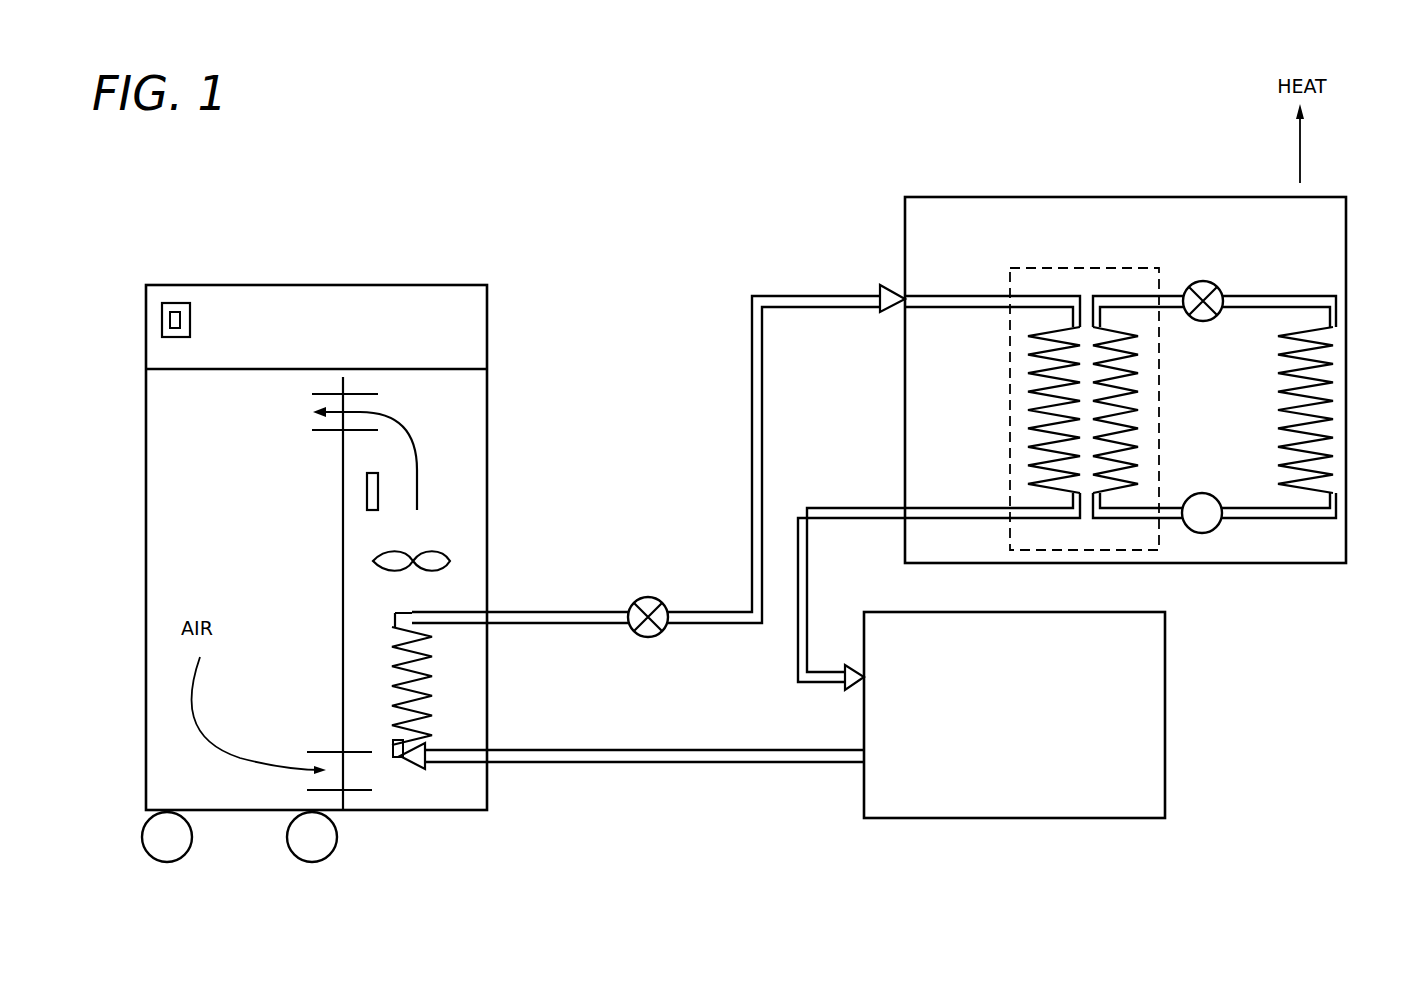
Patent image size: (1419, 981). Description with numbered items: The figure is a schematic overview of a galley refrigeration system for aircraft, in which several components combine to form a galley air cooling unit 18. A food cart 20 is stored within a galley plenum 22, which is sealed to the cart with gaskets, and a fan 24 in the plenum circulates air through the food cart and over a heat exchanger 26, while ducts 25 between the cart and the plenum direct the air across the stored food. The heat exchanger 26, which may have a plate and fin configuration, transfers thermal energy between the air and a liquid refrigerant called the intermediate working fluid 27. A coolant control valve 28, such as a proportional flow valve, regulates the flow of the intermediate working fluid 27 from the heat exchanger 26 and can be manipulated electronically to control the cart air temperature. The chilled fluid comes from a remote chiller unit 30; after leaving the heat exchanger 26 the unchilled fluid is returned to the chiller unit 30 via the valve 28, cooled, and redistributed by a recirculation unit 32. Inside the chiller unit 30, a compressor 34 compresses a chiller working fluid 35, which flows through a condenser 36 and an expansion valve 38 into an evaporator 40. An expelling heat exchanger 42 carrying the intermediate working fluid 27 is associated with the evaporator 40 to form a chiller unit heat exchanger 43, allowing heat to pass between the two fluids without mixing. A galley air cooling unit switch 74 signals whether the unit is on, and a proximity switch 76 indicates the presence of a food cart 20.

The galley air cooling unit 18 is at (296, 368).
The food cart 20 is at (225, 812).
The galley plenum 22 is at (437, 812).
The fan 24 is at (445, 557).
The ducts 25 is at (372, 393).
The heat exchanger 26 is at (432, 680).
The intermediate working fluid 27 is at (817, 293).
The coolant control valve 28 is at (645, 597).
The remote chiller unit 30 is at (1050, 195).
The recirculation unit 32 is at (1165, 742).
The compressor 34 is at (1208, 535).
The chiller working fluid 35 is at (1303, 518).
The condenser 36 is at (1330, 400).
The expansion valve 38 is at (1225, 290).
The evaporator 40 is at (1112, 496).
The expelling heat exchanger 42 is at (1030, 395).
The chiller unit heat exchanger 43 is at (1010, 468).
The galley air cooling unit switch 74 is at (172, 318).
The proximity switch 76 is at (378, 490).